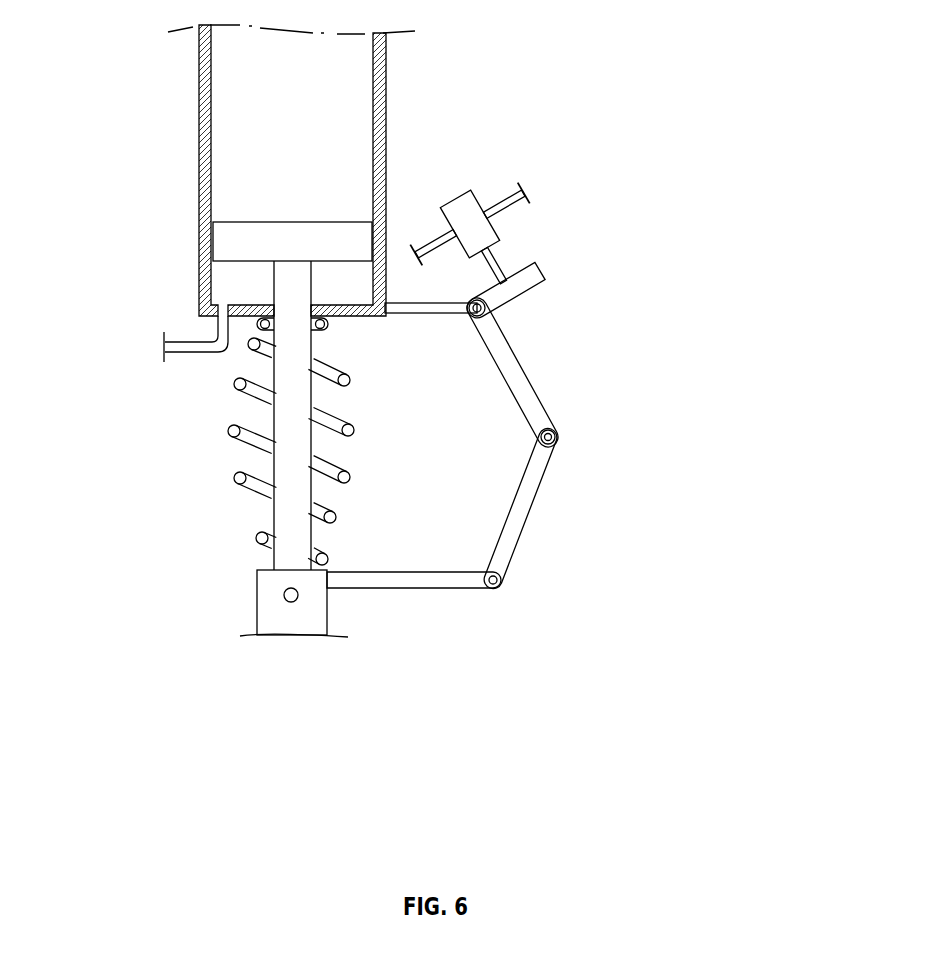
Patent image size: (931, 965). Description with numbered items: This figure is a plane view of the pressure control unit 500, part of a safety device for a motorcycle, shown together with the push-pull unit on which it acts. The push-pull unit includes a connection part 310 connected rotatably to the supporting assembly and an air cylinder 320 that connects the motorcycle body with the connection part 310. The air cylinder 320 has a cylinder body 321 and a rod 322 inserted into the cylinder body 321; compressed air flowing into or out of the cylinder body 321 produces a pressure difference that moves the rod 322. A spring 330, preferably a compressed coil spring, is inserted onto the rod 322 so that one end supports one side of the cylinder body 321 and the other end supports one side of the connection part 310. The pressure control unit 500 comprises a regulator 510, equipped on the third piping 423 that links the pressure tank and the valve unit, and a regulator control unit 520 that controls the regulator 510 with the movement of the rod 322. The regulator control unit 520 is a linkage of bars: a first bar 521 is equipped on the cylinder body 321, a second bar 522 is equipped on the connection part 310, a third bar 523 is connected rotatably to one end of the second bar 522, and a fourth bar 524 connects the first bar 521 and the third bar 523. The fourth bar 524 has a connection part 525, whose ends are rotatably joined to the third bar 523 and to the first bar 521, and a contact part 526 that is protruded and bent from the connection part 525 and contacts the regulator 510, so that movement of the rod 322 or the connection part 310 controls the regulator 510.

The connection part 310 is at (247, 598).
The air cylinder 320 is at (170, 230).
The cylinder body 321 is at (203, 118).
The rod 322 is at (284, 418).
The spring 330 is at (237, 477).
The third piping 423 is at (504, 192).
The pressure control unit 500 is at (585, 394).
The regulator 510 is at (583, 180).
The regulator control unit 520 is at (558, 467).
The first bar 521 is at (410, 318).
The second bar 522 is at (407, 590).
The third bar 523 is at (537, 490).
The fourth bar 524 is at (628, 354).
The connection part 525 is at (523, 383).
The contact part 526 is at (522, 298).